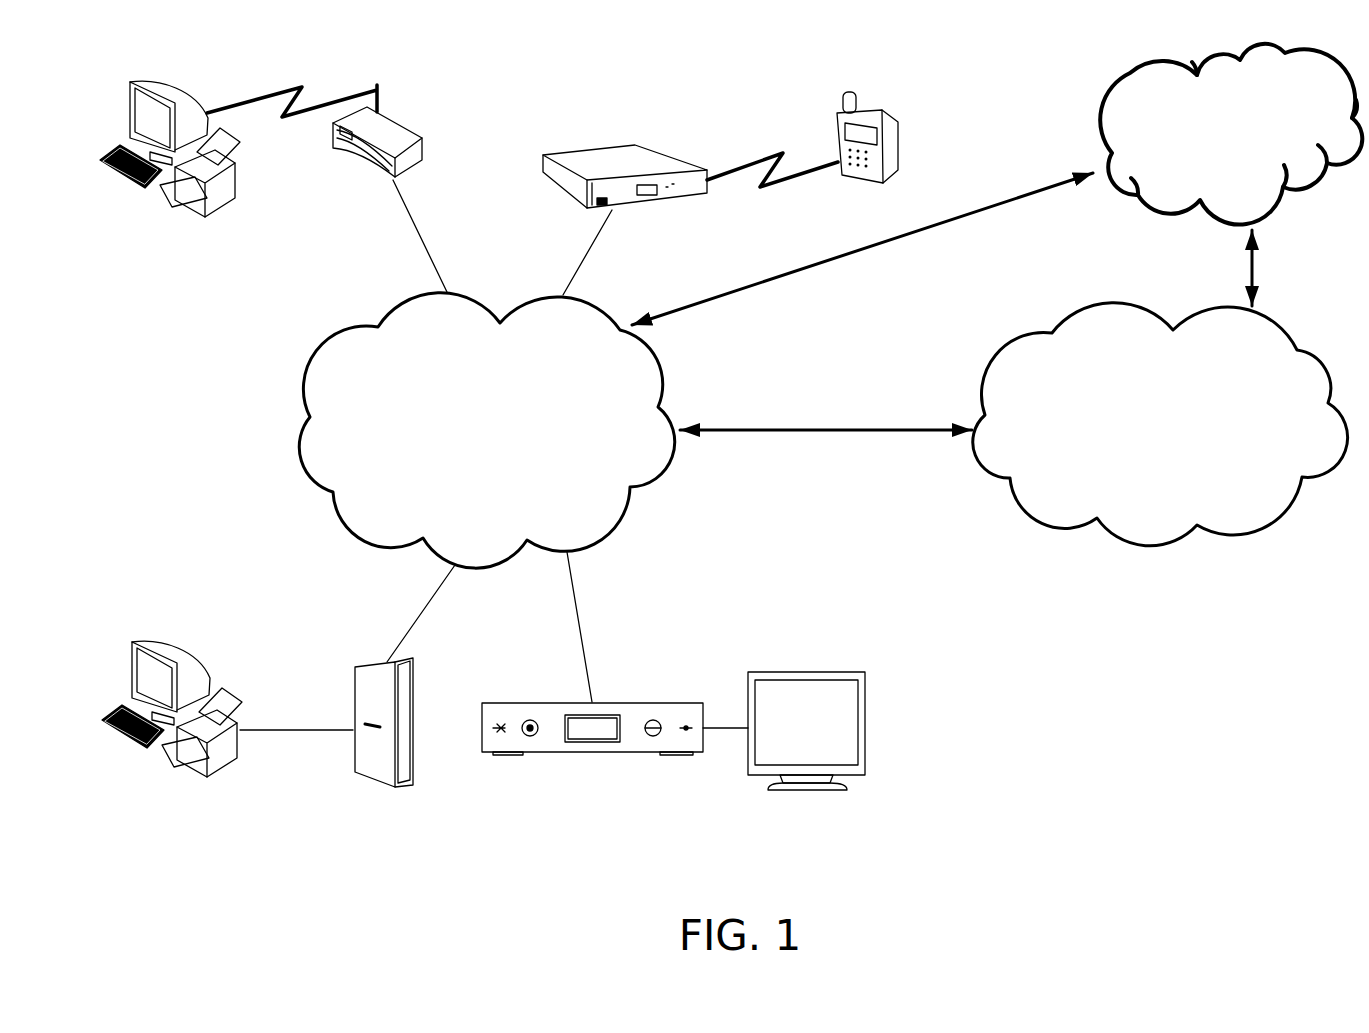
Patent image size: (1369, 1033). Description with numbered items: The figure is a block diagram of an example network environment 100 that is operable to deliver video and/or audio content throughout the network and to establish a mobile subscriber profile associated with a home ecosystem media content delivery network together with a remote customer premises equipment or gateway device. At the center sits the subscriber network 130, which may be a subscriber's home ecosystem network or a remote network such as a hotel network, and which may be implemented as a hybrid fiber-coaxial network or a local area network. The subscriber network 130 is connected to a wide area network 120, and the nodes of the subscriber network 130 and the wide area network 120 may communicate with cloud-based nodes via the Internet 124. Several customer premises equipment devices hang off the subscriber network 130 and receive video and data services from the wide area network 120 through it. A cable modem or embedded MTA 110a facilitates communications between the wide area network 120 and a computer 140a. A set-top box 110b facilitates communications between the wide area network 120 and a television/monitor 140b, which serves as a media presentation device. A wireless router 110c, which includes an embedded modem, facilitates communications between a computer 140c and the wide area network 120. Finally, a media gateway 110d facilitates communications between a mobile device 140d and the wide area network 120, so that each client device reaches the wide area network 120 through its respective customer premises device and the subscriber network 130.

The network environment 100 is at (1262, 808).
The modem 110a is at (392, 790).
The set-top box 110b is at (587, 753).
The wireless router 110c is at (413, 128).
The media gateway 110d is at (636, 142).
The wide area network 120 is at (1147, 546).
The Internet 124 is at (1320, 197).
The subscriber network 130 is at (395, 550).
The computer 140a is at (147, 640).
The television/monitor 140b is at (815, 672).
The computer 140c is at (147, 78).
The mobile device 140d is at (893, 118).